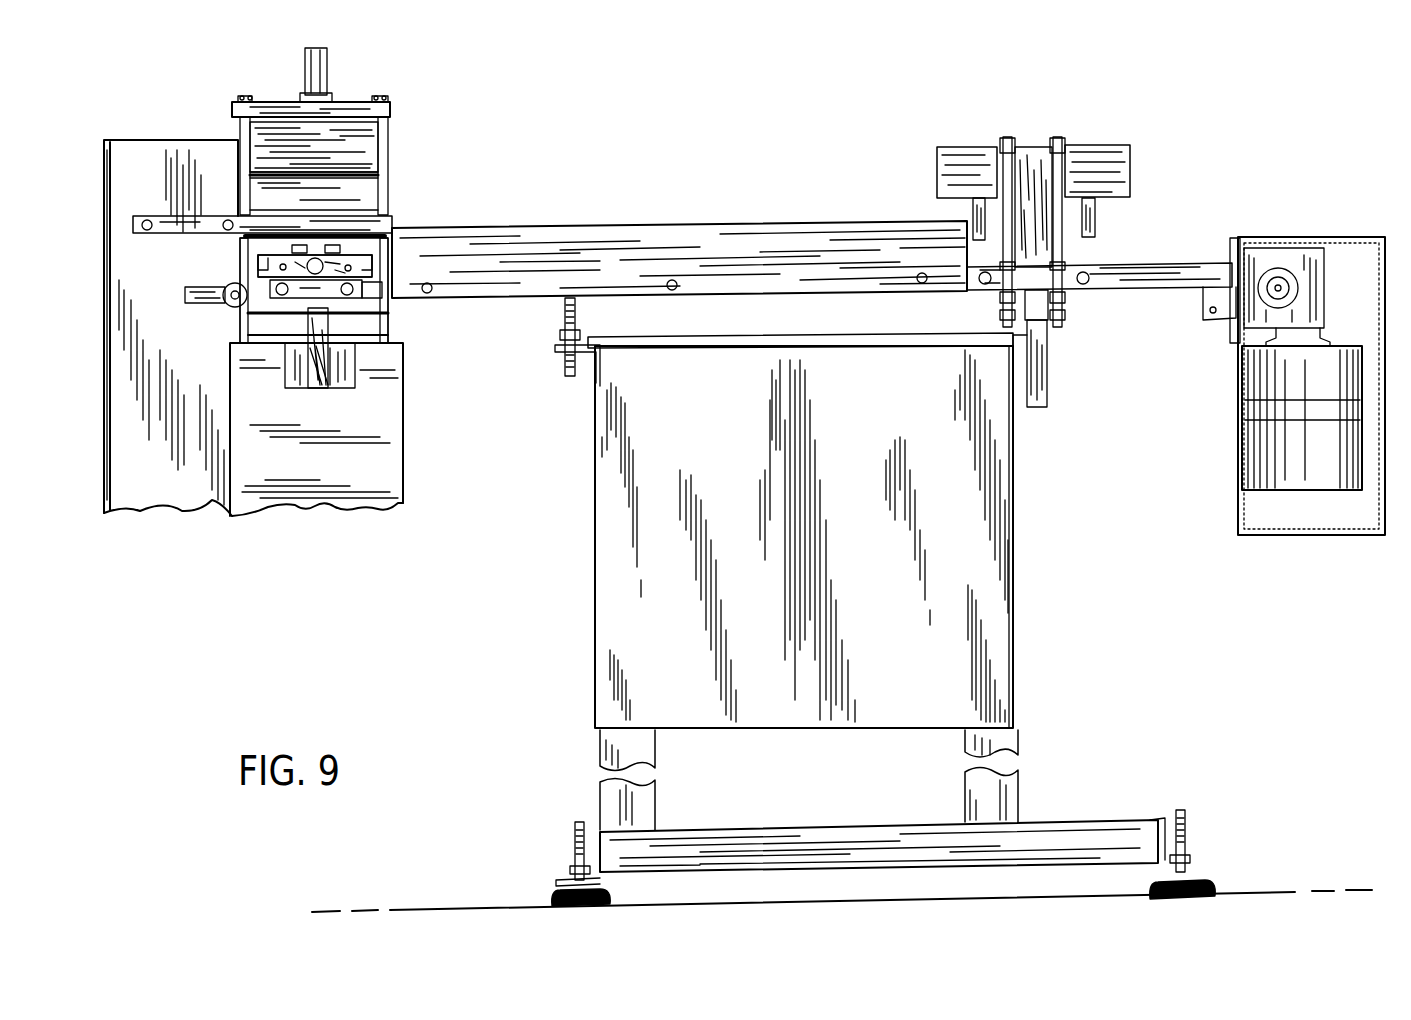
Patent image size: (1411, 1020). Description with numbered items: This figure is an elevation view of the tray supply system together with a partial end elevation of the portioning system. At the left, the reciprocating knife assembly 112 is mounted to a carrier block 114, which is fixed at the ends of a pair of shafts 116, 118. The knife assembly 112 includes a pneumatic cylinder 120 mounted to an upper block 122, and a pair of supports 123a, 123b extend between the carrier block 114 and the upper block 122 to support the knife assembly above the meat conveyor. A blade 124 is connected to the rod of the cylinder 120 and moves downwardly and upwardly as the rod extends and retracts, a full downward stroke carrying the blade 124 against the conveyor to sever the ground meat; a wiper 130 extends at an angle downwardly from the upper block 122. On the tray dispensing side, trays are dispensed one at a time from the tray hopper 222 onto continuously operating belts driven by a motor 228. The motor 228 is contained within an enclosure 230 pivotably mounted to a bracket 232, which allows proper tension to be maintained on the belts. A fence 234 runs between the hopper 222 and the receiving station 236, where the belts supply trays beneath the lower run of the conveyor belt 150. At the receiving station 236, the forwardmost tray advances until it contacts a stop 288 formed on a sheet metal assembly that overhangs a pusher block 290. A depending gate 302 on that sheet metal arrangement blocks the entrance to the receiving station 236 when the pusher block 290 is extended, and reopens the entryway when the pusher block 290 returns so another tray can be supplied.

The reciprocating knife assembly 112 is at (321, 131).
The carrier block 114 is at (173, 238).
The shaft 116 is at (147, 220).
The shaft 118 is at (228, 220).
The pneumatic cylinder 120 is at (340, 74).
The upper block 122 is at (355, 104).
The support 123a is at (240, 126).
The support 123b is at (389, 133).
The blade 124 is at (366, 182).
The wiper 130 is at (389, 146).
The conveyor belt 150 is at (275, 218).
The tray hopper 222 is at (1148, 148).
The motor 228 is at (1243, 376).
The enclosure 230 is at (1388, 262).
The bracket 232 is at (1205, 300).
The fence 234 is at (655, 228).
The receiving station 236 is at (383, 285).
The stop 288 is at (262, 258).
The pusher block 290 is at (252, 328).
The gate 302 is at (380, 262).